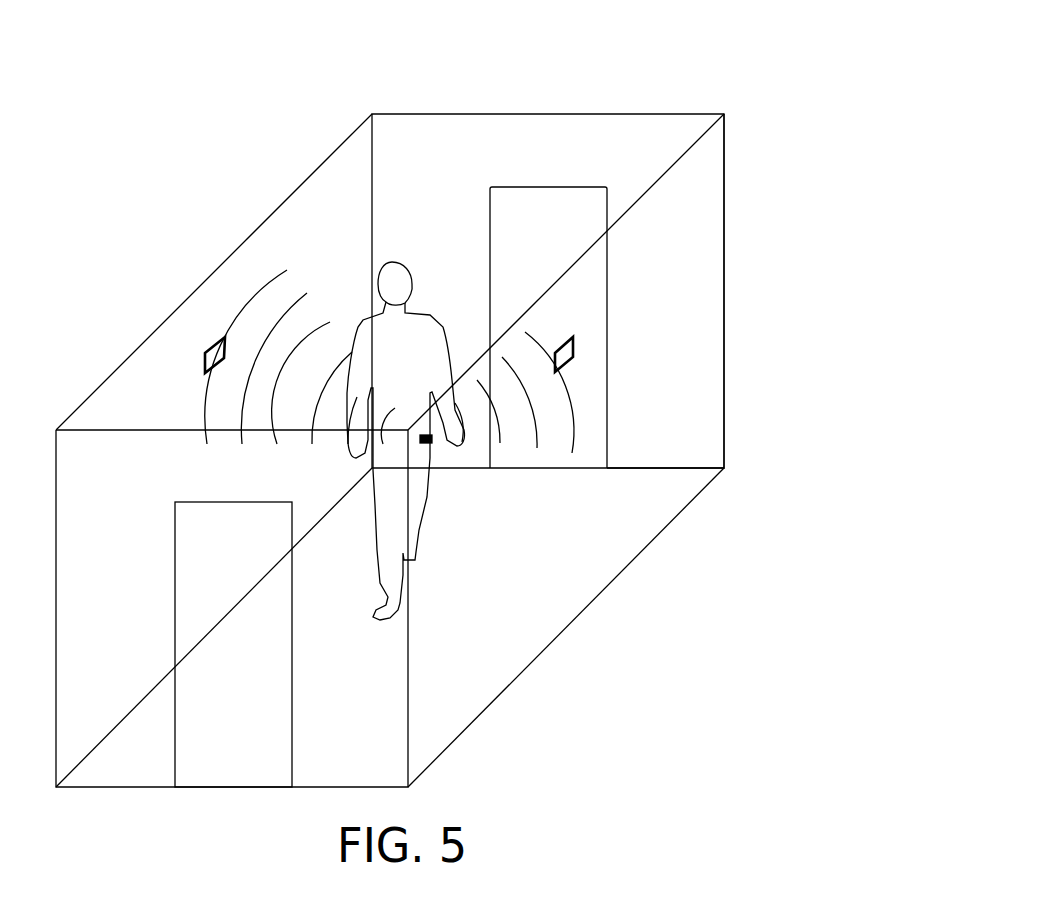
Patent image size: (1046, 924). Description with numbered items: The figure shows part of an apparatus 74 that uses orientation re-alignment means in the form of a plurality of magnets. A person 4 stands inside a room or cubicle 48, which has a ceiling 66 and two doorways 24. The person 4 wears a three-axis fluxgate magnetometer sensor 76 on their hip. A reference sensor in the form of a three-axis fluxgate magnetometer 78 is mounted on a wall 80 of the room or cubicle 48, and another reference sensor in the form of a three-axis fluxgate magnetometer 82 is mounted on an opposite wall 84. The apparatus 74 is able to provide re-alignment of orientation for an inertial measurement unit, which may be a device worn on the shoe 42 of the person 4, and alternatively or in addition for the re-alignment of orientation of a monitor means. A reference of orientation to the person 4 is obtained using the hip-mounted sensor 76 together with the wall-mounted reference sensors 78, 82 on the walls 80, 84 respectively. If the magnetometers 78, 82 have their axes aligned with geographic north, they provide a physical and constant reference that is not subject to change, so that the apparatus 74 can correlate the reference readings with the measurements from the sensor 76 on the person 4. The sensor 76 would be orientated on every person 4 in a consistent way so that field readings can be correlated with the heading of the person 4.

The person 4 is at (386, 425).
The doorway 24 is at (533, 235).
The shoe 42 is at (364, 625).
The room or cubicle 48 is at (516, 662).
The ceiling 66 is at (312, 188).
The apparatus 74 is at (712, 84).
The three-axis fluxgate magnetometer sensor 76 is at (433, 440).
The three-axis fluxgate magnetometer 78 is at (205, 363).
The wall 80 is at (114, 421).
The three-axis fluxgate magnetometer 82 is at (560, 370).
The opposite wall 84 is at (669, 229).